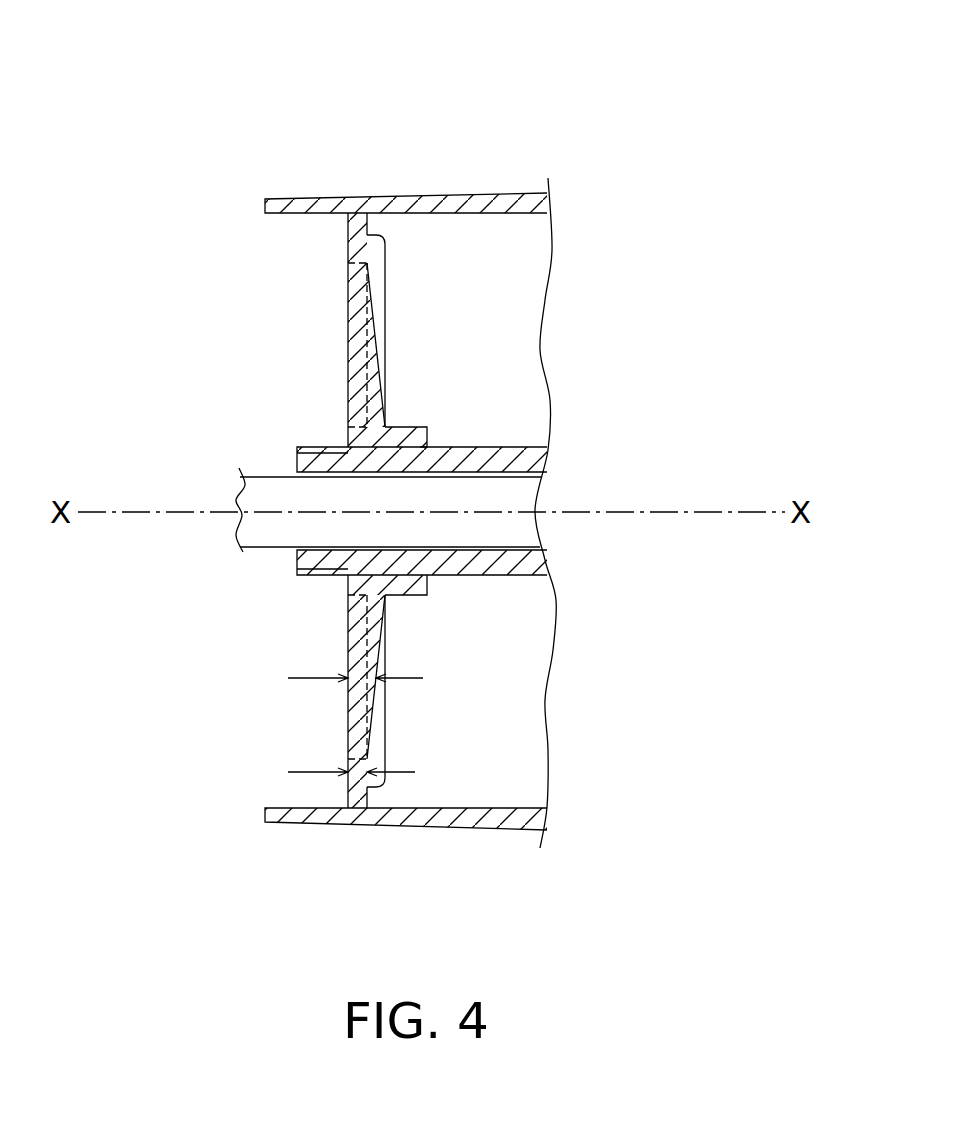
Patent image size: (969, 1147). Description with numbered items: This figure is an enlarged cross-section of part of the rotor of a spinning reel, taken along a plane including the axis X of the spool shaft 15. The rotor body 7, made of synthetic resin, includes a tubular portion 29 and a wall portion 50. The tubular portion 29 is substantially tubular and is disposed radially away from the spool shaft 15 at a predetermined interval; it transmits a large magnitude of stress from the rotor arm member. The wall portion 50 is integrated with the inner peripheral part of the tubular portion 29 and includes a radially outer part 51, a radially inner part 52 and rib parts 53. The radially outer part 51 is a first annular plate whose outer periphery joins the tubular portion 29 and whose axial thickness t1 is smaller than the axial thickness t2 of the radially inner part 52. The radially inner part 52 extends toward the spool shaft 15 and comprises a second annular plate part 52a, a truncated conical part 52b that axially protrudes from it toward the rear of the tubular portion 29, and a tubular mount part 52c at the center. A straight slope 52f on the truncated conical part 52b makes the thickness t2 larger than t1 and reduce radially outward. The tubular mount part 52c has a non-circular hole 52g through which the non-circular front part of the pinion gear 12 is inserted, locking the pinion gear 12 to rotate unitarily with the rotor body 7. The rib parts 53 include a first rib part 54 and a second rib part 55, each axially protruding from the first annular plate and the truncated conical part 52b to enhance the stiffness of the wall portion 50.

The rotor body 7 is at (488, 144).
The tubular portion 29 is at (287, 189).
The wall portion 50 is at (310, 625).
The radially outer part 51 is at (357, 235).
The radially inner part 52 is at (178, 306).
The second annular plate part 52a is at (357, 305).
The truncated conical part 52b is at (373, 370).
The tubular mount part 52c is at (363, 437).
The slope 52f is at (373, 317).
The non-circular hole 52g is at (403, 449).
The rib parts 53 is at (450, 511).
The first rib part 54 is at (373, 258).
The second rib part 55 is at (373, 743).
The pinion gear 12 is at (518, 458).
The spool shaft 15 is at (518, 530).
The axial thickness of the first annular plate part t1 is at (351, 756).
The axial thickness of the radially inner part t2 is at (355, 662).